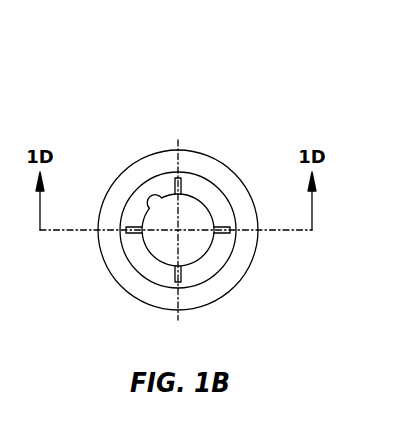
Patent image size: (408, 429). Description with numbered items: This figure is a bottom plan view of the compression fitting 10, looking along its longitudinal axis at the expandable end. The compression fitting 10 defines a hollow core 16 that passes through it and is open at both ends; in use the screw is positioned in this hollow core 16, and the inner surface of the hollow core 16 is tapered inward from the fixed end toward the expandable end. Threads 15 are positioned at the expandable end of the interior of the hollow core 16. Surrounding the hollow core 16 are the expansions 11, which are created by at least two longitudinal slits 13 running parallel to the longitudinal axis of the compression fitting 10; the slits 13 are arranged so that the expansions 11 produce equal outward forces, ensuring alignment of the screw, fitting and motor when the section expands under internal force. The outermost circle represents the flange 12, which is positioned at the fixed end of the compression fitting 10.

The compression fitting 10 is at (188, 202).
The expansions 11 is at (213, 261).
The flange 12 is at (254, 259).
The longitudinal slits 13 is at (182, 188).
The threads 15 is at (165, 198).
The hollow core 16 is at (187, 247).